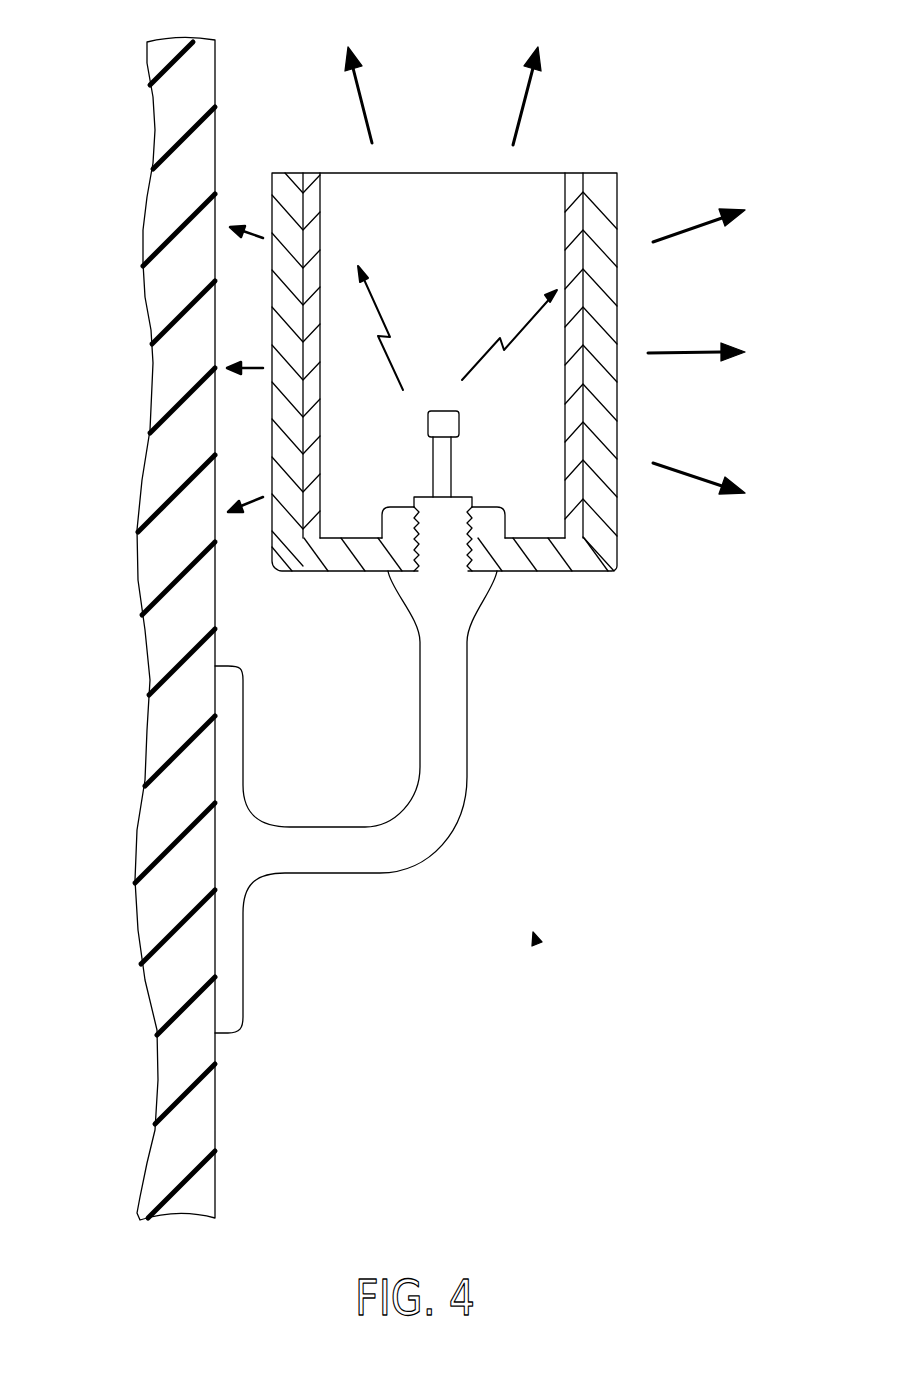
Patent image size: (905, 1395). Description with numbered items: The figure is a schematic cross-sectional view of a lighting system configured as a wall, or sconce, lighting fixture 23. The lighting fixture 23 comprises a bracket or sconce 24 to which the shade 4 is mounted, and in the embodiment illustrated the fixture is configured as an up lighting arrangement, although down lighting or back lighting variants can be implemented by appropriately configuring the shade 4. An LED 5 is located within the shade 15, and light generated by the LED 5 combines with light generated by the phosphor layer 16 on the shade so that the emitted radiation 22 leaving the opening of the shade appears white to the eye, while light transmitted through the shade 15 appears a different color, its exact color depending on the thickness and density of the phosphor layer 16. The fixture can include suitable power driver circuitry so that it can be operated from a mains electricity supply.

The shade 4 is at (484, 369).
The LED 5 is at (452, 423).
The shade 15 is at (695, 232).
The phosphor layer 16 is at (573, 200).
The white light 22 is at (523, 108).
The lighting fixture 23 is at (536, 940).
The bracket or sconce 24 is at (457, 765).